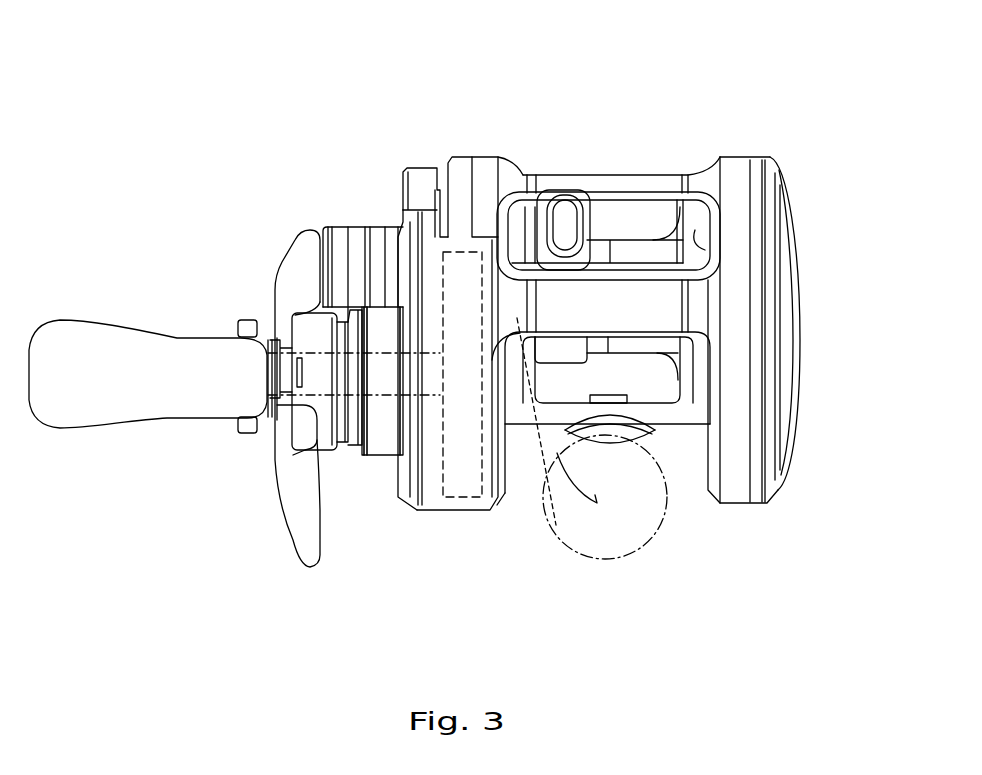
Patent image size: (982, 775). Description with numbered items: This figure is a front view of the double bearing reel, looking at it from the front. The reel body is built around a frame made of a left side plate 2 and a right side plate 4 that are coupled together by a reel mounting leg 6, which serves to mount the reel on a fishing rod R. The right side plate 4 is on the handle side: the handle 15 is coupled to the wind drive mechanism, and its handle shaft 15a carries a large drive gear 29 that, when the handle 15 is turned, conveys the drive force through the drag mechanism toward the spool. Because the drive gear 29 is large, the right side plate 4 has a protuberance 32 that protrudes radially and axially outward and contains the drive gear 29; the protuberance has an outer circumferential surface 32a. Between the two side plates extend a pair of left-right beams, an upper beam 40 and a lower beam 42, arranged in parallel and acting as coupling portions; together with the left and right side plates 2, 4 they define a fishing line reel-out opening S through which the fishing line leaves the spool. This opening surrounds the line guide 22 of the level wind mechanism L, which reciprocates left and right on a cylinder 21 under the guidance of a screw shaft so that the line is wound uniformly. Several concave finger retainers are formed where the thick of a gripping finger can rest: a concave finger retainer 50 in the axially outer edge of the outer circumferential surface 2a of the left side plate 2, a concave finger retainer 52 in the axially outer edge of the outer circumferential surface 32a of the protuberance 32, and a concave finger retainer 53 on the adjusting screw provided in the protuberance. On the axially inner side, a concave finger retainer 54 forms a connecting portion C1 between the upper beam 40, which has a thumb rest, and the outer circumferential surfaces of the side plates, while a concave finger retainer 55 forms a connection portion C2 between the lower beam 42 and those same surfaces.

The left side plate 2 is at (730, 513).
The outer circumferential surface of the left side plate 2a is at (737, 457).
The right side plate 4 is at (458, 520).
The reel mounting leg 6 is at (603, 430).
The handle 15 is at (212, 397).
The handle shaft 15a is at (377, 388).
The cylinder 21 is at (655, 207).
The line guide 22 is at (600, 238).
The drive gear 29 is at (472, 512).
The protuberance 32 is at (398, 230).
The outer circumferential surface of the protuberance 32a is at (430, 208).
The upper beam 40 is at (633, 273).
The lower beam 42 is at (657, 305).
The concave finger retainer 50 is at (778, 492).
The concave finger retainer 52 is at (410, 508).
The concave finger retainer 53 is at (332, 232).
The concave finger retainer 54 is at (528, 175).
The concave finger retainer 55 is at (702, 303).
The connecting portion C1 is at (505, 181).
The connection portion C2 is at (713, 328).
The level wind mechanism L is at (573, 195).
The fishing rod R is at (622, 563).
The fishing line reel-out opening S is at (695, 230).